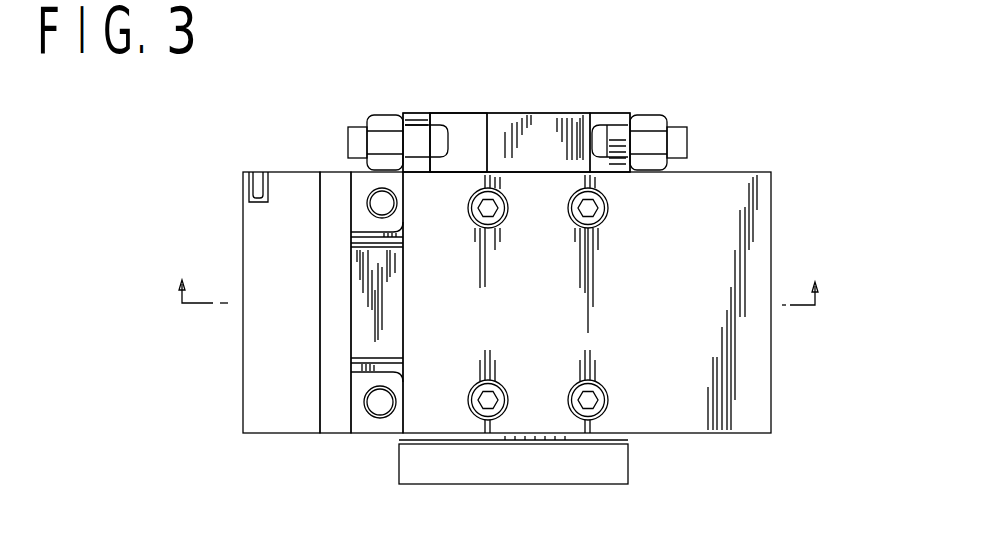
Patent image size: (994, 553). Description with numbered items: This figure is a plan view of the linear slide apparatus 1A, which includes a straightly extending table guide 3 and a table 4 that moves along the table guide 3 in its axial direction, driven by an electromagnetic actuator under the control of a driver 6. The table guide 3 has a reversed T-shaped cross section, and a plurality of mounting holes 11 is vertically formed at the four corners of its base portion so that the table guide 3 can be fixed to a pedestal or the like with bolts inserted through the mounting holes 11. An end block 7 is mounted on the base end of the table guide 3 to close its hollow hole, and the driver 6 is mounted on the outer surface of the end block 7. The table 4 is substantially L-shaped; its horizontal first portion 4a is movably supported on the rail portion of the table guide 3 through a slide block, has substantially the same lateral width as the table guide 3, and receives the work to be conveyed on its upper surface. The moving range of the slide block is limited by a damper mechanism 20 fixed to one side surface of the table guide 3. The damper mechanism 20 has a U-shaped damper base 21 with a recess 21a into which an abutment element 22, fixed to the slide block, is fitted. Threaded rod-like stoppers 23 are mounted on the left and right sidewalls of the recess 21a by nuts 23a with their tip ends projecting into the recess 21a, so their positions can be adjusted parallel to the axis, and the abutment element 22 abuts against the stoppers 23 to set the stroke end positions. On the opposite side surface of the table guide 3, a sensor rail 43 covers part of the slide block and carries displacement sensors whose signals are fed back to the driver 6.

The linear slide apparatus 1A is at (503, 273).
The table guide 3 is at (380, 460).
The table 4 is at (781, 200).
The first portion 4a is at (752, 410).
The driver 6 is at (263, 235).
The end block 7 is at (332, 190).
The mounting holes 11 is at (376, 403).
The damper mechanism 20 is at (577, 107).
The damper base 21 is at (452, 132).
The recess 21a is at (470, 138).
The abutment element 22 is at (545, 130).
The stoppers 23 is at (440, 135).
The nuts 23a is at (387, 115).
The sensor rail 43 is at (470, 455).